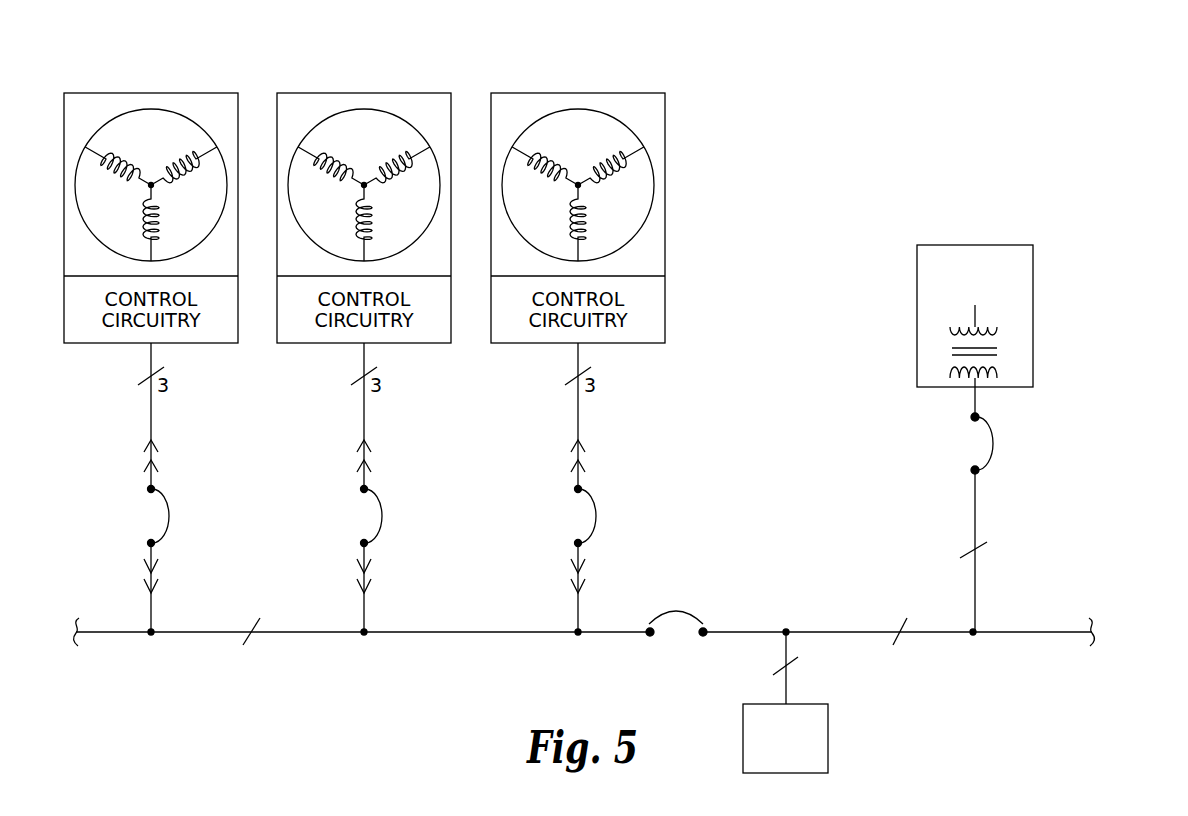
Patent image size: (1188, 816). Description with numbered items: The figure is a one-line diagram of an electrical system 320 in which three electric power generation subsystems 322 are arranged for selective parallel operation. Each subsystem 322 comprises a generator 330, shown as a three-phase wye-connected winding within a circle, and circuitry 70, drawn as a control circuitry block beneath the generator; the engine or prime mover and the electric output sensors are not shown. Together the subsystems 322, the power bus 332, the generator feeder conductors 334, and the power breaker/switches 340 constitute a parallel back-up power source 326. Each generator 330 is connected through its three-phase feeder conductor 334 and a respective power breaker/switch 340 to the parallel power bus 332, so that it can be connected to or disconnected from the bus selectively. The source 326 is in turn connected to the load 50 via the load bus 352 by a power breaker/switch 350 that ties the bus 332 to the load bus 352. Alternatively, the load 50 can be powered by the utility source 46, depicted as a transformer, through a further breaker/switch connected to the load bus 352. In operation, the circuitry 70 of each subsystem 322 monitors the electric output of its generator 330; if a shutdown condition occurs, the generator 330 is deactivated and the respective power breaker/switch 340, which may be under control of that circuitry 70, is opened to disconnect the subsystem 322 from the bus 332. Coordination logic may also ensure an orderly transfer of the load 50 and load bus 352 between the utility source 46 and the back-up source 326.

The electrical system 320 is at (592, 393).
The electric power generation subsystem 322 is at (157, 92).
The parallel back-up power source 326 is at (403, 324).
The generator 330 is at (89, 92).
The circuitry 70 is at (64, 303).
The generator feeder conductor 334 is at (150, 413).
The power breaker/switch 340 is at (172, 513).
The power bus 332 is at (445, 634).
The power breaker/switch 350 is at (692, 610).
The load bus 352 is at (943, 635).
The utility source 46 is at (1033, 278).
The load 50 is at (828, 740).